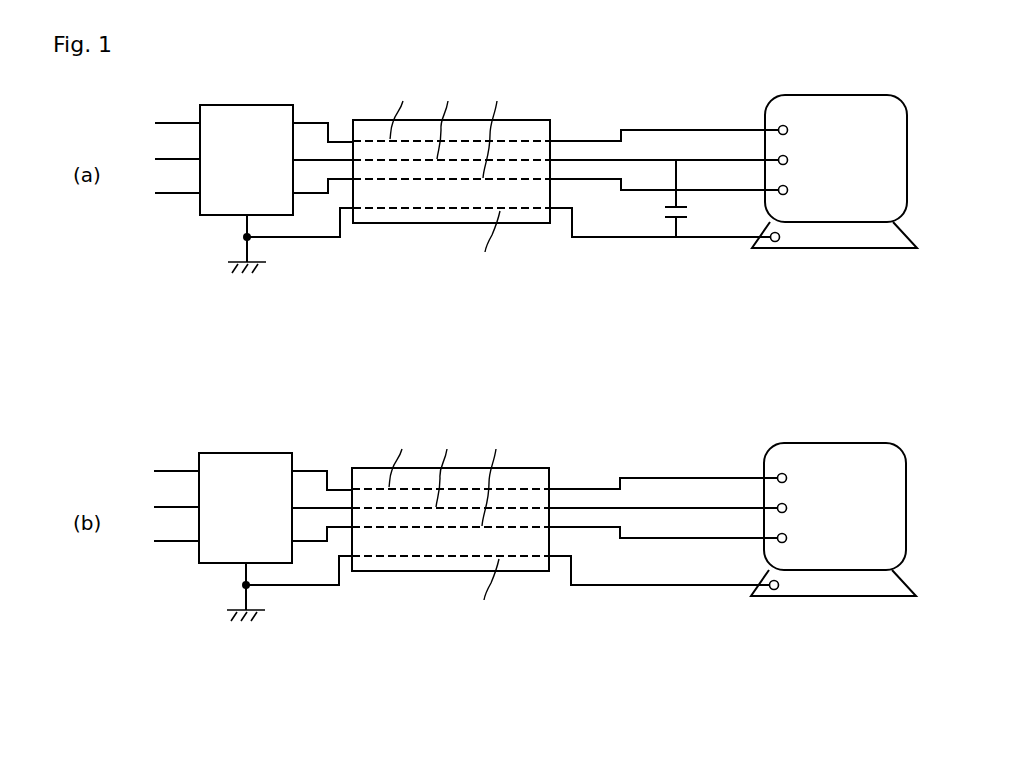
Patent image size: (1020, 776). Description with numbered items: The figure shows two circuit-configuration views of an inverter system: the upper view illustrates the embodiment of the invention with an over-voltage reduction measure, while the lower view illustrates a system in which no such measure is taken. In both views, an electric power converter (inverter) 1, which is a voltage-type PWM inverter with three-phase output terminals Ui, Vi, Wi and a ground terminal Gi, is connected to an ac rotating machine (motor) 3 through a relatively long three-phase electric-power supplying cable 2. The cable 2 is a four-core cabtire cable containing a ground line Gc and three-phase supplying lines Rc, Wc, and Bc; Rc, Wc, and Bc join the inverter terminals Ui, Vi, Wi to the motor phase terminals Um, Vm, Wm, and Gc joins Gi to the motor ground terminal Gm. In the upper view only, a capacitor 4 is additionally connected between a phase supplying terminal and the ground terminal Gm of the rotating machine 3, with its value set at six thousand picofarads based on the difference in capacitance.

The electric power converter (inverter) 1 is at (208, 215).
The three-phase electric-power supplying cable 2 is at (398, 224).
The ac rotating machine (motor) 3 is at (826, 249).
The capacitor 4 is at (656, 212).